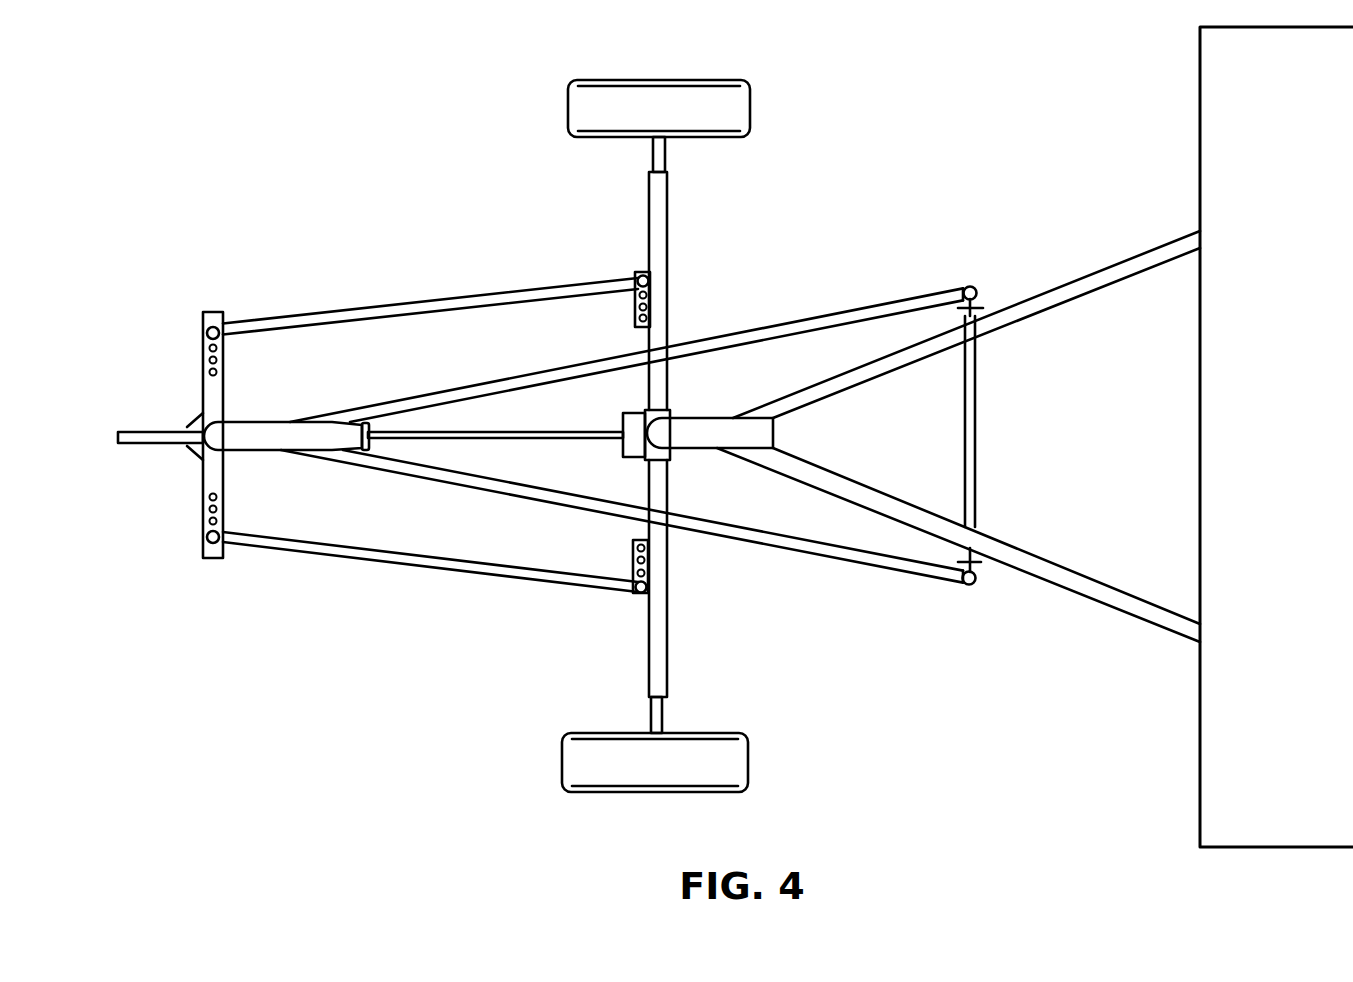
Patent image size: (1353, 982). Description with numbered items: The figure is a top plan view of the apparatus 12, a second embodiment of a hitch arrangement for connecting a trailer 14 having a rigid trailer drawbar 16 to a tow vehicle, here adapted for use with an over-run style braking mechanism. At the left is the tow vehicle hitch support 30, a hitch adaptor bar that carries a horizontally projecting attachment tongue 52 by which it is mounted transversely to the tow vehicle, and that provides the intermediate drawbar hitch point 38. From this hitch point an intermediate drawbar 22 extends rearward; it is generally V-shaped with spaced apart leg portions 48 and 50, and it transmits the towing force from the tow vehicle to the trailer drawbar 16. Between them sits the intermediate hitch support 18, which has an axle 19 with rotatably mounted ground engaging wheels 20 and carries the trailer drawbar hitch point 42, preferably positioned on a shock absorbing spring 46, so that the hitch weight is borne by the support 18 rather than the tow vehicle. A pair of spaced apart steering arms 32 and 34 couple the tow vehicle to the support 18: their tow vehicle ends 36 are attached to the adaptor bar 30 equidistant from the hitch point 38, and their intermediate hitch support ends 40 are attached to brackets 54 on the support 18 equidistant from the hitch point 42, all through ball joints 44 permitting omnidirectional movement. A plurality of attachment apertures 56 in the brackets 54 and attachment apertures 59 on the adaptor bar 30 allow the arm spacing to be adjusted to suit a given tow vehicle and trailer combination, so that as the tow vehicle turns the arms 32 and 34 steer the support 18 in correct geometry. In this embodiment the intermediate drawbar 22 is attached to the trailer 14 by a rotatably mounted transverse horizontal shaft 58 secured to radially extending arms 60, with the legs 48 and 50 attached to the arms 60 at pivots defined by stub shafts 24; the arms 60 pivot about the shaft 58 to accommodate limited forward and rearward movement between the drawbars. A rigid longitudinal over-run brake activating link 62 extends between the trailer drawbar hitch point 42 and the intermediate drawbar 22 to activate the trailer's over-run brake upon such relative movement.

The apparatus 12 is at (360, 138).
The trailer 14 is at (1238, 122).
The trailer drawbar 16 is at (1157, 255).
The intermediate hitch support 18 is at (695, 650).
The axle 19 is at (660, 148).
The ground engaging wheels 20 is at (735, 103).
The intermediate drawbar 22 is at (757, 537).
The stub shafts 24 is at (973, 287).
The tow vehicle hitch support 30 is at (215, 387).
The steering arm 32 is at (460, 568).
The steering arm 34 is at (468, 300).
The tow vehicle ends 36 is at (257, 328).
The intermediate drawbar hitch point 38 is at (257, 452).
The intermediate hitch support ends 40 is at (613, 287).
The trailer drawbar hitch point 42 is at (675, 448).
The ball joints 44 is at (207, 318).
The spring 46 is at (660, 490).
The leg portion 48 is at (903, 567).
The leg portion 50 is at (903, 305).
The attachment tongue 52 is at (138, 437).
The brackets 54 is at (638, 325).
The attachment apertures 56 is at (648, 307).
The transverse horizontal shaft 58 is at (970, 467).
The attachment apertures 59 is at (222, 365).
The radially extending arms 60 is at (980, 298).
The over-run brake activating link 62 is at (540, 430).